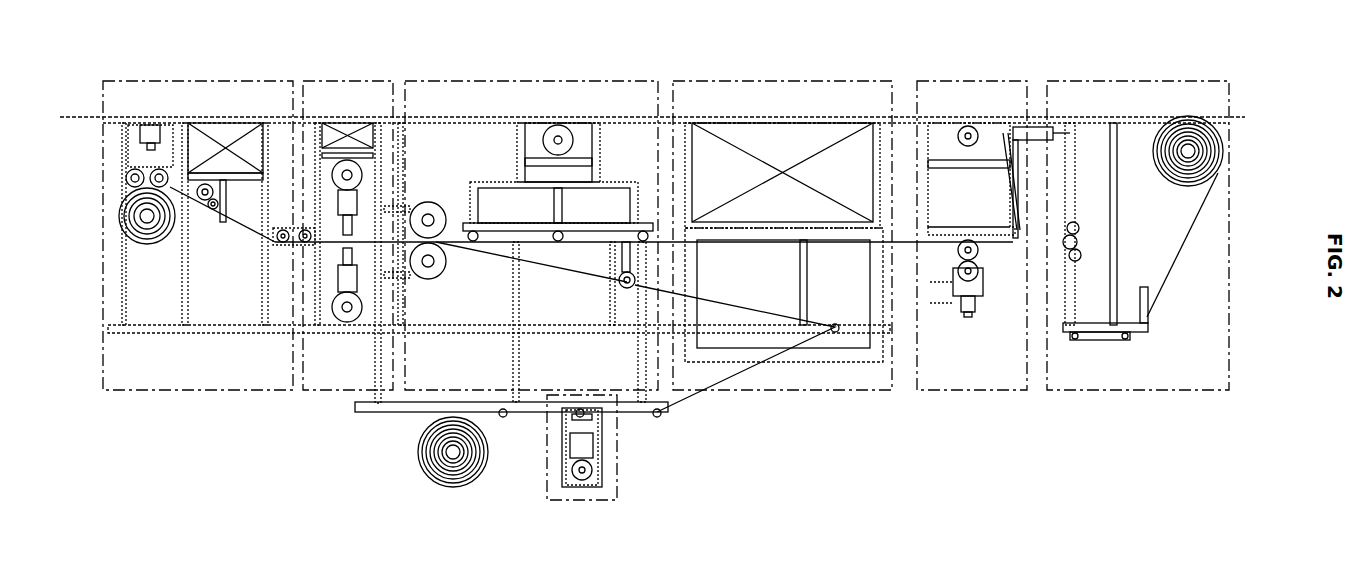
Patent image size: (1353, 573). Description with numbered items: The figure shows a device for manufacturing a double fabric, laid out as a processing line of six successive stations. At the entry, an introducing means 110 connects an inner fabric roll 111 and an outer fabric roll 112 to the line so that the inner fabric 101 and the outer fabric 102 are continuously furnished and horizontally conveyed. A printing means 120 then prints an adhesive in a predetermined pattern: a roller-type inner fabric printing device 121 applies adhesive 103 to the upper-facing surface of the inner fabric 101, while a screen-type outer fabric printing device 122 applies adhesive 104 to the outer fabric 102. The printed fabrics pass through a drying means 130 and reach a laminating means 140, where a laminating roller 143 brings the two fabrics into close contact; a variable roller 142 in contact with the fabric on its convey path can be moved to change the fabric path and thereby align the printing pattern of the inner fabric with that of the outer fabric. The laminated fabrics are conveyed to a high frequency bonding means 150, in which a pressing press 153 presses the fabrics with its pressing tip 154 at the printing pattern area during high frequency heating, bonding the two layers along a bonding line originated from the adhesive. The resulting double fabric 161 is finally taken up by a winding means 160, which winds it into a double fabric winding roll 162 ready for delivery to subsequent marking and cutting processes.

The inner fabric 101 is at (1185, 235).
The outer fabric 102 is at (532, 415).
The adhesive 103 is at (823, 246).
The adhesive 104 is at (713, 302).
The introducing means 110 is at (1137, 80).
The inner fabric roll 111 is at (1190, 115).
The outer fabric roll 112 is at (418, 452).
The printing means 120 is at (980, 80).
The inner fabric printing device 121 is at (975, 318).
The outer fabric printing device 122 is at (600, 462).
The drying means 130 is at (782, 80).
The laminating means 140 is at (532, 80).
The variable roller 142 is at (633, 288).
The laminating roller 143 is at (436, 195).
The bonding means 150 is at (347, 80).
The pressing press 153 is at (338, 277).
The pressing tip 154 is at (340, 253).
The winding means 160 is at (197, 80).
The double fabric 161 is at (246, 228).
The double fabric winding roll 162 is at (148, 246).